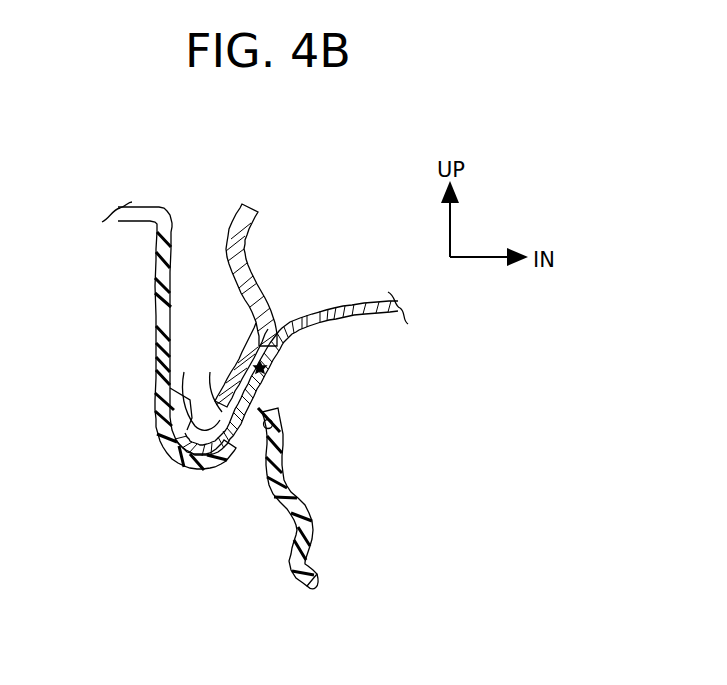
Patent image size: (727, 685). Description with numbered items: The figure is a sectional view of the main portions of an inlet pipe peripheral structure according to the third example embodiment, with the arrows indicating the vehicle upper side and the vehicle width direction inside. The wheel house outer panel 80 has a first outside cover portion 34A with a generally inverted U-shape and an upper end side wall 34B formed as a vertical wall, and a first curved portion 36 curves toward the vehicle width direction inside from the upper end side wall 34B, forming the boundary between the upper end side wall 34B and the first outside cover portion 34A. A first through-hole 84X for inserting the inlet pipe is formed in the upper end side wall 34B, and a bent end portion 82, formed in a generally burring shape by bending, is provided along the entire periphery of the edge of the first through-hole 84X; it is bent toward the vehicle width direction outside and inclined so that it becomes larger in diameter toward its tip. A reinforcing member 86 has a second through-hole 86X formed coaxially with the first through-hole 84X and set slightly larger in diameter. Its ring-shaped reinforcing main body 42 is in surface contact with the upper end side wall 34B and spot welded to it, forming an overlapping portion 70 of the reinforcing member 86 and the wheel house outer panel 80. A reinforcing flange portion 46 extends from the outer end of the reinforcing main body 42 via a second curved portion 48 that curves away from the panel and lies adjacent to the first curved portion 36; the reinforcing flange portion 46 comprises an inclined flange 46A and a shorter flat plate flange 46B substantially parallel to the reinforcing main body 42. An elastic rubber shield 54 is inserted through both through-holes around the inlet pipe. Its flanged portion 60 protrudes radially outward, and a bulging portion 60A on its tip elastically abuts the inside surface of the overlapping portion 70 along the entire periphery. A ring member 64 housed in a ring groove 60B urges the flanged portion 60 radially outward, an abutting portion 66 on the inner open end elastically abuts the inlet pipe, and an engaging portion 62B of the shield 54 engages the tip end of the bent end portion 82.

The first outside cover portion 34A is at (357, 302).
The upper end side wall 34B is at (258, 425).
The first curved portion 36 is at (285, 340).
The reinforcing main body 42 is at (229, 342).
The reinforcing flange portion 46 is at (274, 236).
The inclined flange 46A is at (263, 259).
The flat plate flange 46B is at (232, 207).
The second curved portion 48 is at (234, 318).
The shield 54 is at (139, 297).
The flanged portion 60 is at (308, 470).
The bulging portion 60A is at (287, 418).
The ring groove 60B is at (267, 452).
The engaging portion 62B is at (184, 372).
The ring member 64 is at (268, 434).
The abutting portion 66 is at (318, 590).
The overlapping portion 70 is at (292, 374).
The wheel house outer panel 80 is at (375, 330).
The bent end portion 82 is at (163, 453).
The first through-hole 84X is at (205, 470).
The reinforcing member 86 is at (210, 241).
The second through-hole 86X is at (207, 428).